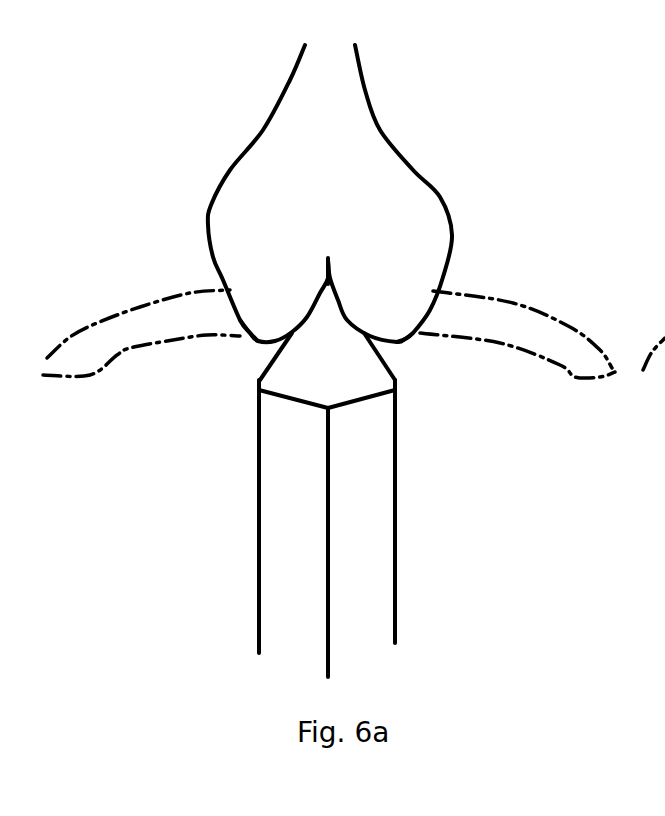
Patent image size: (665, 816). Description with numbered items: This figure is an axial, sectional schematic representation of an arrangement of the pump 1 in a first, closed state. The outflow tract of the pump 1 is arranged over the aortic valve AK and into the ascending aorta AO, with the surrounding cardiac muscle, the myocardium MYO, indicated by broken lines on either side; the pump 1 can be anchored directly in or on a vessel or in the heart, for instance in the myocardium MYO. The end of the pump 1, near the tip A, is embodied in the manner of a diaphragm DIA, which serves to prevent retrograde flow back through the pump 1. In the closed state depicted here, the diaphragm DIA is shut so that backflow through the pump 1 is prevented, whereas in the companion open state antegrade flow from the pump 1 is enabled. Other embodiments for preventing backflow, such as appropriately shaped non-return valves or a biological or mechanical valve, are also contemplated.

The ascending aorta AO is at (308, 128).
The diaphragm DIA is at (310, 261).
The aortic valve AK is at (262, 327).
The myocardium MYO is at (457, 375).
The catheter tip A is at (286, 404).
The pump 1 is at (500, 606).